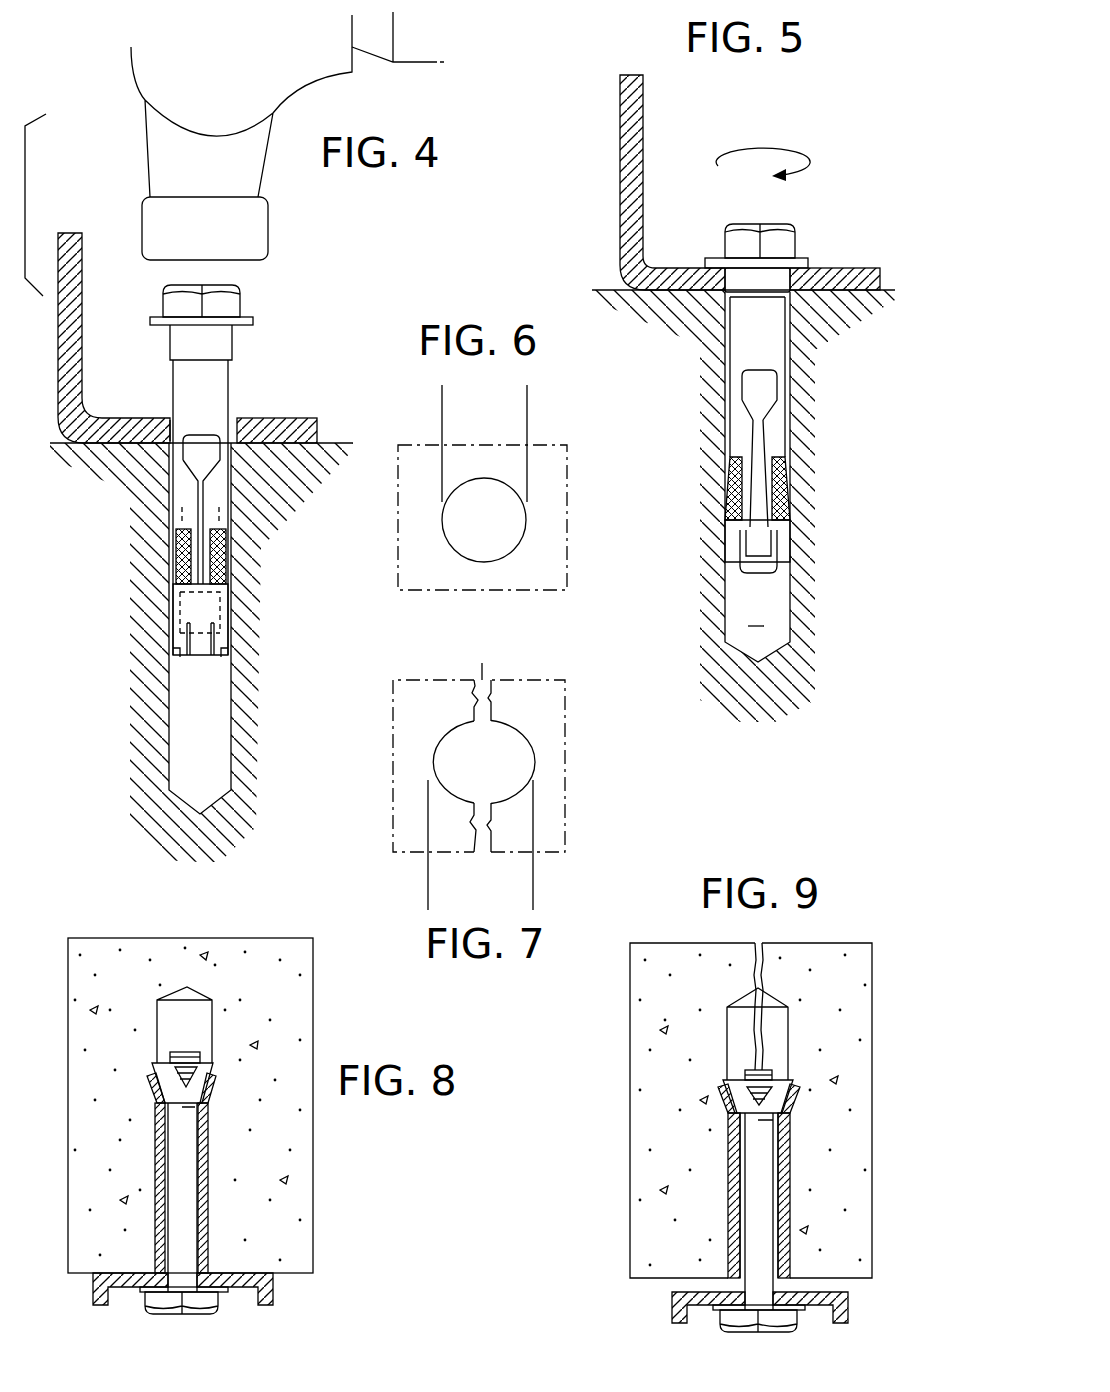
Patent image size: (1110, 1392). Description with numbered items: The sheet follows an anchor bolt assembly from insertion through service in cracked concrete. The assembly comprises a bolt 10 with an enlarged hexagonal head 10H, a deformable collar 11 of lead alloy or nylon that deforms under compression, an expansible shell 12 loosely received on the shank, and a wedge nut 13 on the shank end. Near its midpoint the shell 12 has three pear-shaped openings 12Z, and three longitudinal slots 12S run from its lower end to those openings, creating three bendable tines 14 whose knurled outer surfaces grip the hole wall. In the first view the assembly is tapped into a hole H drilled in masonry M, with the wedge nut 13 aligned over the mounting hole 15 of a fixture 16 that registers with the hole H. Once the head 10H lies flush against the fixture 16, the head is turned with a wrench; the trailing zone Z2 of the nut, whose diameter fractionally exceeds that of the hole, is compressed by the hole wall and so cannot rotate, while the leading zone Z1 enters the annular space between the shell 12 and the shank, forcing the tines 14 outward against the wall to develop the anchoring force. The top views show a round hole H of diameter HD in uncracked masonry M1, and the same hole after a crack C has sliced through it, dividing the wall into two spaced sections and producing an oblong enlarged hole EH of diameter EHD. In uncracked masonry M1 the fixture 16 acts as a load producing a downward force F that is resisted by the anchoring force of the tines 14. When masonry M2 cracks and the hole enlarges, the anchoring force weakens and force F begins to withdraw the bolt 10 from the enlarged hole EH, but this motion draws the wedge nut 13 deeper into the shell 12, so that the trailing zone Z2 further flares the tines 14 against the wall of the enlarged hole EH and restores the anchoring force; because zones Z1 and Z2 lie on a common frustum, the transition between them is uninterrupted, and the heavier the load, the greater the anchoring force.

In FIG. 5, the bolt 10 is at (777, 578).
In FIG. 8, the bolt 10 is at (188, 1200).
In FIG. 9, the bolt 10 is at (759, 1211).
In FIG. 4, the hexagonal head 10H is at (242, 302).
In FIG. 5, the hexagonal head 10H is at (792, 240).
In FIG. 8, the hexagonal head 10H is at (214, 1312).
In FIG. 9, the hexagonal head 10H is at (784, 1330).
In FIG. 4, the deformable collar 11 is at (232, 345).
In FIG. 5, the deformable collar 11 is at (790, 283).
In FIG. 4, the expansible shell 12 is at (236, 373).
In FIG. 5, the expansible shell 12 is at (770, 331).
In FIG. 8, the expansible shell 12 is at (207, 1152).
In FIG. 9, the expansible shell 12 is at (789, 1140).
In FIG. 4, the pear-shaped openings 12Z is at (202, 443).
In FIG. 5, the pear-shaped openings 12Z is at (762, 393).
In FIG. 5, the longitudinal slots 12S is at (763, 460).
In FIG. 4, the wedge nut 13 is at (233, 607).
In FIG. 8, the wedge nut 13 is at (166, 1052).
In FIG. 9, the wedge nut 13 is at (792, 1082).
In FIG. 4, the bendable tines 14 is at (225, 548).
In FIG. 5, the bendable tines 14 is at (730, 477).
In FIG. 9, the bendable tines 14 is at (790, 1232).
In FIG. 4, the mounting hole 15 is at (168, 418).
In FIG. 4, the fixture 16 is at (82, 280).
In FIG. 5, the fixture 16 is at (622, 143).
In FIG. 8, the fixture 16 is at (273, 1294).
In FIG. 9, the fixture 16 is at (848, 1308).
In FIG. 4, the masonry M is at (327, 447).
In FIG. 5, the masonry M is at (678, 318).
In FIG. 6, the uncracked masonry M1 is at (567, 473).
In FIG. 8, the uncracked masonry M1 is at (112, 948).
In FIG. 7, the cracked masonry M2 is at (547, 682).
In FIG. 9, the cracked masonry M2 is at (713, 953).
In FIG. 4, the hole H is at (222, 708).
In FIG. 5, the hole H is at (757, 477).
In FIG. 6, the hole H is at (517, 533).
In FIG. 8, the hole H is at (202, 1017).
In FIG. 6, the hole diameter HD is at (527, 408).
In FIG. 7, the enlarged hole EH is at (528, 760).
In FIG. 9, the enlarged hole EH is at (782, 1027).
In FIG. 7, the enlarged hole diameter EHD is at (533, 893).
In FIG. 7, the crack C is at (480, 745).
In FIG. 9, the crack C is at (758, 1006).
In FIG. 5, the leading zone Z1 is at (760, 505).
In FIG. 8, the leading zone Z1 is at (197, 1092).
In FIG. 9, the leading zone Z1 is at (742, 1100).
In FIG. 4, the trailing zone Z2 is at (228, 642).
In FIG. 5, the trailing zone Z2 is at (787, 543).
In FIG. 8, the trailing zone Z2 is at (200, 1070).
In FIG. 9, the trailing zone Z2 is at (737, 1078).
In FIG. 8, the downward force F is at (182, 1320).
In FIG. 9, the downward force F is at (758, 1333).